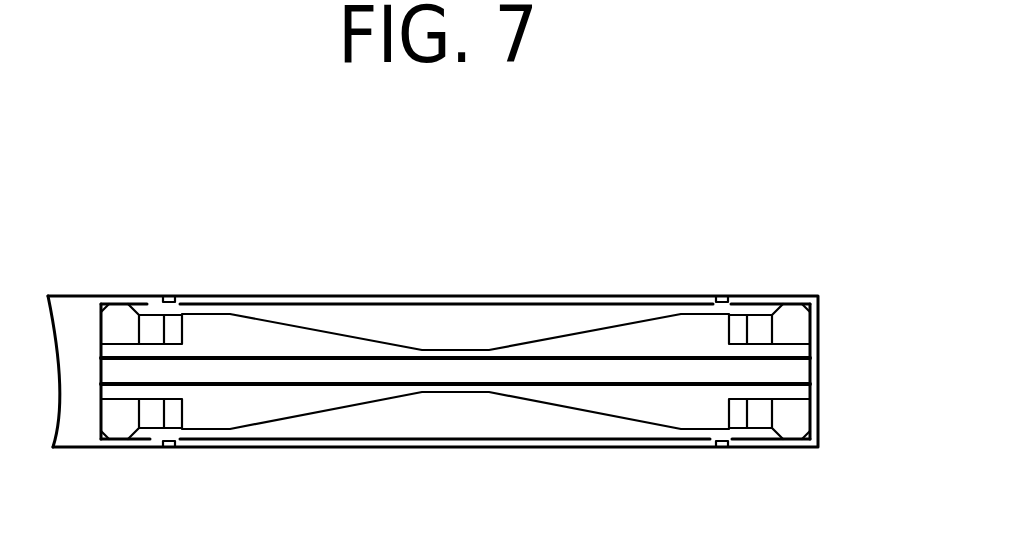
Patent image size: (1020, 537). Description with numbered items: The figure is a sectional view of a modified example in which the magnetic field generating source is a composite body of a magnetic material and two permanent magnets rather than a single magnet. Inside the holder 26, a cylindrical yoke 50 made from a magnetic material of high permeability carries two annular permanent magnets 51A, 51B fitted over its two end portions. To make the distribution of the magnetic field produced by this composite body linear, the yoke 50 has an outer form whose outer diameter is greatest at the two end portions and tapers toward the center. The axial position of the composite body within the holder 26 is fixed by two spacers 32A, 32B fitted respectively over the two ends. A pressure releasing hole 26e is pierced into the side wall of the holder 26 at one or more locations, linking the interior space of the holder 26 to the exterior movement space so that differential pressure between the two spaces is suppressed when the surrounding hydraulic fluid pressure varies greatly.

The holder 26 is at (524, 290).
The pressure releasing hole 26e is at (170, 300).
The yoke 50 is at (622, 400).
The annular permanent magnet 51A is at (150, 326).
The annular permanent magnet 51B is at (755, 328).
The spacer 32A is at (122, 417).
The spacer 32B is at (785, 422).